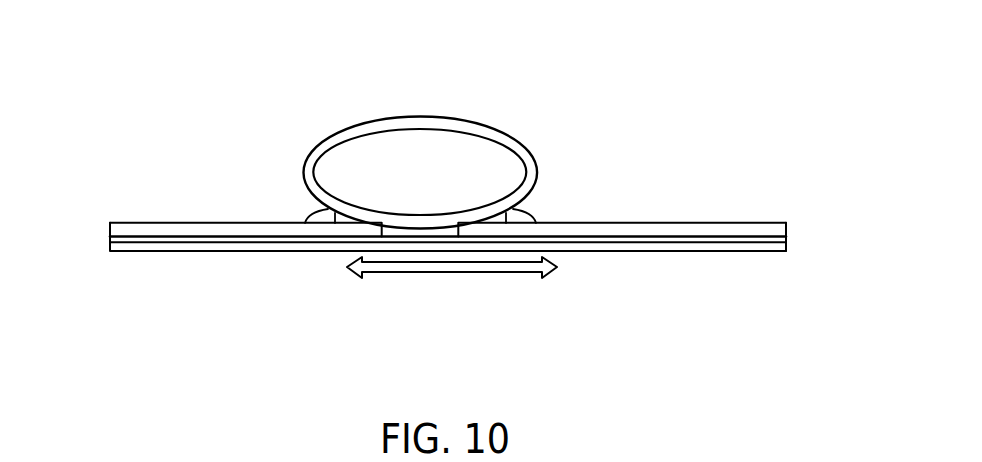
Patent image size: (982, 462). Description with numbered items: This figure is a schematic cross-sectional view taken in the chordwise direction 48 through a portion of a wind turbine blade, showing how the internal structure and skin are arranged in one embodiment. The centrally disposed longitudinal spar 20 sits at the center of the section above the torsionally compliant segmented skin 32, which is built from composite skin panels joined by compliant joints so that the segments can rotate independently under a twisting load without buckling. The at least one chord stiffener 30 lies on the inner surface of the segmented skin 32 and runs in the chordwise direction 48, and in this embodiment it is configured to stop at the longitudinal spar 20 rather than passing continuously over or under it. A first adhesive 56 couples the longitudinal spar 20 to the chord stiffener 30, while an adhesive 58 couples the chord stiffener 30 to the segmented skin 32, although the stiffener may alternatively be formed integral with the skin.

The centrally disposed longitudinal spar 20 is at (304, 172).
The chord stiffener 30 is at (702, 222).
The torsionally compliant segmented skin 32 is at (138, 246).
The chordwise direction 48 is at (412, 273).
The first adhesive 56 is at (528, 215).
The adhesive 58 is at (786, 233).